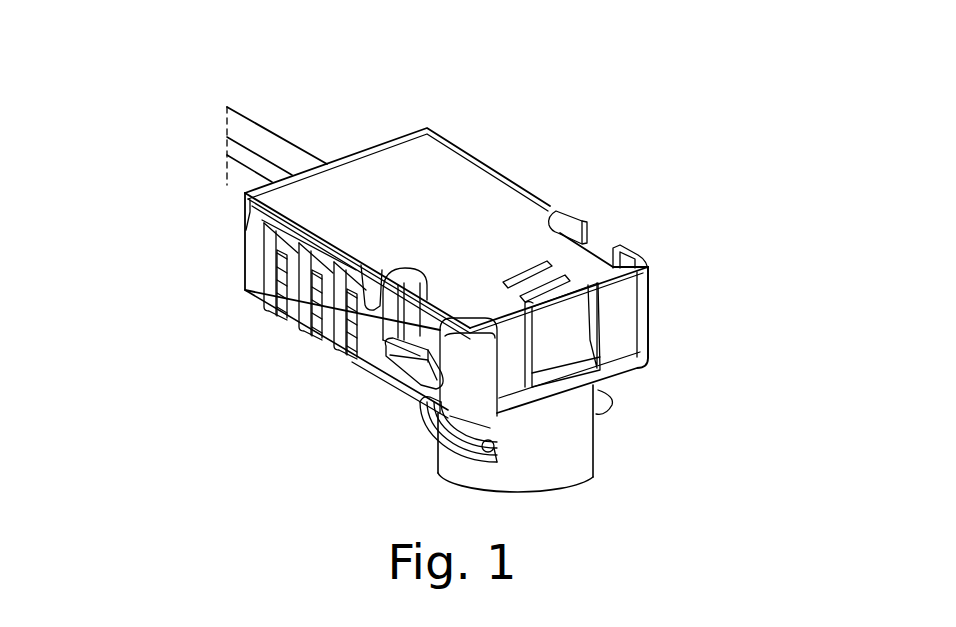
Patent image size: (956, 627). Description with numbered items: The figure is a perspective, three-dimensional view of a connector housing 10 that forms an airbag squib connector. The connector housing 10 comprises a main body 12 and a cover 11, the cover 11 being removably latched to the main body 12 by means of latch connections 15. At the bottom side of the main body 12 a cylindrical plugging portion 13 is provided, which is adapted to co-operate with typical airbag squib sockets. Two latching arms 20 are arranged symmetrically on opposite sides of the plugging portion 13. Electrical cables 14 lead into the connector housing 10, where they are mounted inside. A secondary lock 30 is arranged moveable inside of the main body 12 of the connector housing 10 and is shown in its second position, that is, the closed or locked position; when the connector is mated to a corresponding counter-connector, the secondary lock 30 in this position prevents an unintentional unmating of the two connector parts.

The connector housing 10 is at (605, 233).
The cover 11 is at (423, 170).
The main body 12 is at (650, 317).
The cylindrical plugging portion 13 is at (553, 461).
The electrical cables 14 is at (275, 148).
The latch connections 15 is at (273, 230).
The latching arms 20 is at (428, 428).
The secondary lock 30 is at (387, 358).